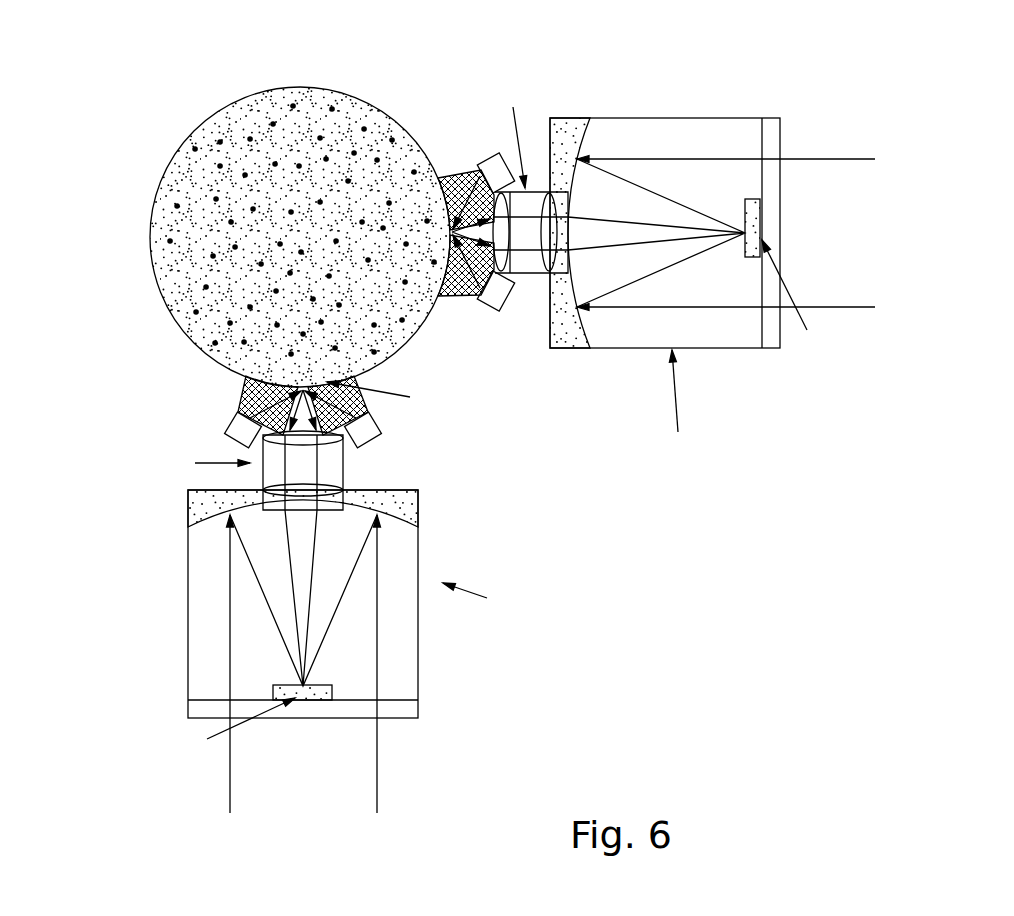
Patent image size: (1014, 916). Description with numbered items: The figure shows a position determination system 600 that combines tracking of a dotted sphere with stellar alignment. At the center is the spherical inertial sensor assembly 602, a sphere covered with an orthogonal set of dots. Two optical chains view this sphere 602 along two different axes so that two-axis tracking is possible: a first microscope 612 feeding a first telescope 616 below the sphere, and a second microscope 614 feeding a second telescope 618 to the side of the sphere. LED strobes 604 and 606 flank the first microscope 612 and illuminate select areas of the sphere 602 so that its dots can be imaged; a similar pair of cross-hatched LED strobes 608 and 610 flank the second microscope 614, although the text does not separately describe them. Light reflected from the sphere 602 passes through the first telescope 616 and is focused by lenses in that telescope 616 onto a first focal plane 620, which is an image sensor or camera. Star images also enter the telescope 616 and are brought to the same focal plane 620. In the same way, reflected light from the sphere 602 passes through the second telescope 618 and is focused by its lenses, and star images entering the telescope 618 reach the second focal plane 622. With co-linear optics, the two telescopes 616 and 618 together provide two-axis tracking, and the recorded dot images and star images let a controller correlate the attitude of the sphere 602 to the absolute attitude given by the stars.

The position determination system 600 is at (140, 130).
The spherical inertial sensor assembly 602 is at (238, 138).
The LED strobe 604 is at (230, 430).
The LED strobe 606 is at (367, 425).
The LED strobe 608 is at (508, 292).
The LED strobe 610 is at (506, 153).
The first microscope 612 is at (262, 471).
The second microscope 614 is at (538, 195).
The first telescope 616 is at (208, 577).
The second telescope 618 is at (657, 147).
The first focal plane 620 is at (309, 701).
The second focal plane 622 is at (758, 232).